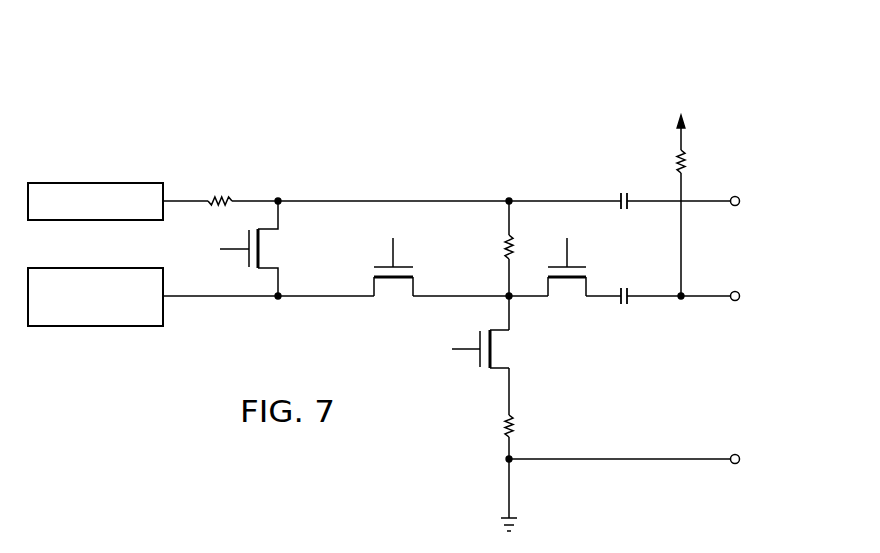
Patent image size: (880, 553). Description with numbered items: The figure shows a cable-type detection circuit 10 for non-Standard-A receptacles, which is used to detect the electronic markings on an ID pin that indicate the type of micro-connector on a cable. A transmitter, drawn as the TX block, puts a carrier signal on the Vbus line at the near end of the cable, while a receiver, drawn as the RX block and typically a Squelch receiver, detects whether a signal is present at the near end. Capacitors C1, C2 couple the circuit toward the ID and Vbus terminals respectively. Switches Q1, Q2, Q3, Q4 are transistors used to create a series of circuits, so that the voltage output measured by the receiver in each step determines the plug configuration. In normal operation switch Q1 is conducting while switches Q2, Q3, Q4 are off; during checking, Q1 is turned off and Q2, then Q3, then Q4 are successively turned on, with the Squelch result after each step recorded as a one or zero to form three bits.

The cable-type detection circuit 10 is at (168, 73).
The switch Q1 is at (263, 248).
The switch Q2 is at (393, 277).
The switch Q3 is at (567, 277).
The switch Q4 is at (495, 349).
The capacitor C1 is at (624, 284).
The capacitor C2 is at (624, 189).